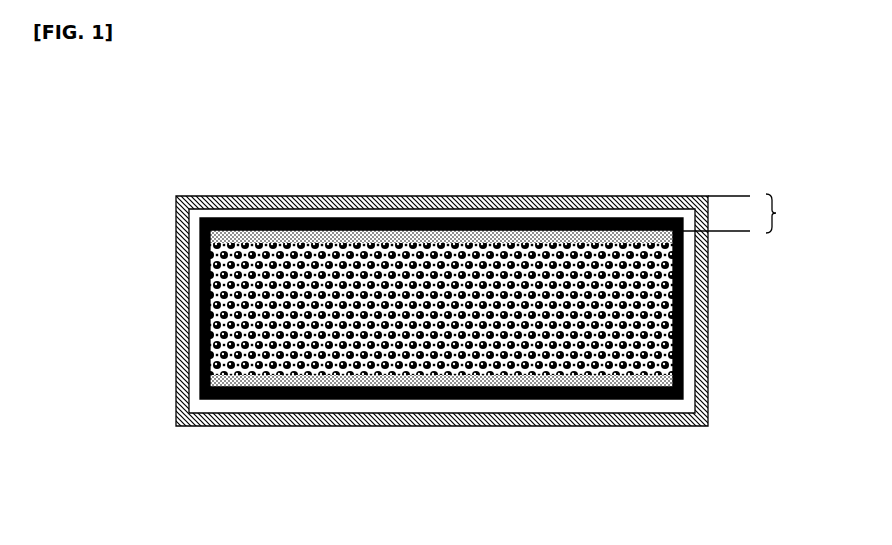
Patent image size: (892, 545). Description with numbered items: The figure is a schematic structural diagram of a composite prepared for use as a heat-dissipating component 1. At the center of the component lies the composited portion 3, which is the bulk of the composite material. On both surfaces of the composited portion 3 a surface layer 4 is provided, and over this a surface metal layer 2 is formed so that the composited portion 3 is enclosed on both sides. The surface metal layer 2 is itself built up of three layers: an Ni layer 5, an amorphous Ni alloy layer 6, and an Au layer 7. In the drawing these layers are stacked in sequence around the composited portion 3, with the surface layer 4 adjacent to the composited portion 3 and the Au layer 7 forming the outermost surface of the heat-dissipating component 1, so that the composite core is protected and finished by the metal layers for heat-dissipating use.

The heat-dissipating component 1 is at (503, 312).
The surface metal layer 2 is at (754, 213).
The composited portion 3 is at (324, 329).
The surface layer 4 is at (479, 382).
The Ni layer 5 is at (349, 217).
The amorphous Ni alloy layer 6 is at (473, 214).
The Au layer 7 is at (615, 197).